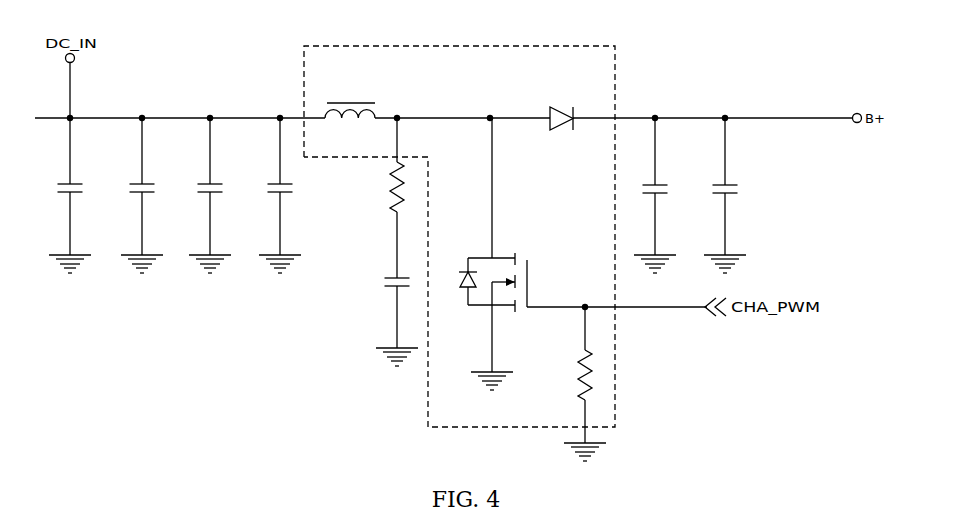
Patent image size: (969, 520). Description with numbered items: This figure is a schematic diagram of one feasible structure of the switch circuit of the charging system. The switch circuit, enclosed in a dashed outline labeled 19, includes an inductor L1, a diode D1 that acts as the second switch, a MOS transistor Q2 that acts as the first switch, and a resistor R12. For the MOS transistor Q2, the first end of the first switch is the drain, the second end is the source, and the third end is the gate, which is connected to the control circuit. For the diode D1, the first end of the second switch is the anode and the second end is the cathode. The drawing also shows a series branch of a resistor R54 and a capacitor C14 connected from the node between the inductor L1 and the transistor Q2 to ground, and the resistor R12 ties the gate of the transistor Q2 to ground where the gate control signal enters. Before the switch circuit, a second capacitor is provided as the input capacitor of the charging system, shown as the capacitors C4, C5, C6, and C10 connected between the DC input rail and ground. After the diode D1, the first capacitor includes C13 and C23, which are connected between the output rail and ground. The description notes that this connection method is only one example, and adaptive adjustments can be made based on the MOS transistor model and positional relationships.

The boost charging circuit 19 is at (430, 46).
The second capacitor C4 is at (68, 194).
The second capacitor C6 is at (140, 194).
The second capacitor C5 is at (208, 194).
The second capacitor C10 is at (278, 194).
The inductor L1 is at (350, 102).
The diode D1 is at (561, 102).
The resistor R54 is at (386, 181).
The capacitor C14 is at (392, 305).
The MOS transistor Q2 is at (583, 254).
The resistor R12 is at (583, 382).
The first capacitor C13 is at (653, 194).
The first capacitor C23 is at (723, 194).